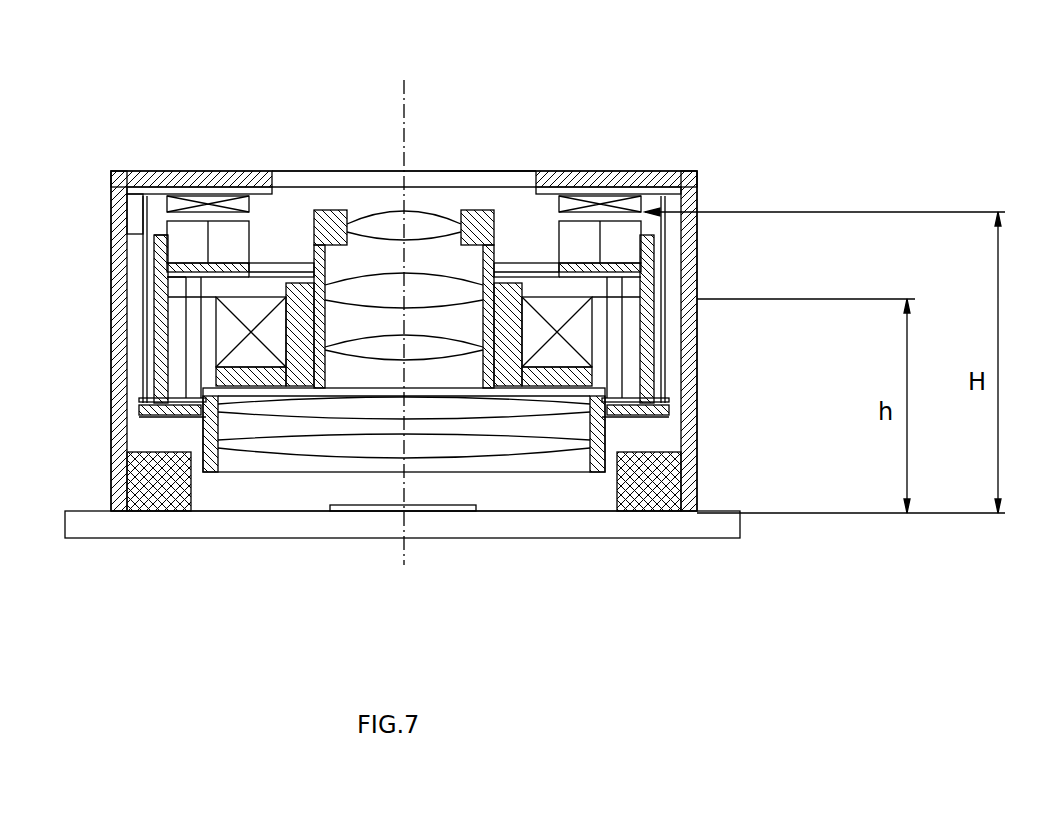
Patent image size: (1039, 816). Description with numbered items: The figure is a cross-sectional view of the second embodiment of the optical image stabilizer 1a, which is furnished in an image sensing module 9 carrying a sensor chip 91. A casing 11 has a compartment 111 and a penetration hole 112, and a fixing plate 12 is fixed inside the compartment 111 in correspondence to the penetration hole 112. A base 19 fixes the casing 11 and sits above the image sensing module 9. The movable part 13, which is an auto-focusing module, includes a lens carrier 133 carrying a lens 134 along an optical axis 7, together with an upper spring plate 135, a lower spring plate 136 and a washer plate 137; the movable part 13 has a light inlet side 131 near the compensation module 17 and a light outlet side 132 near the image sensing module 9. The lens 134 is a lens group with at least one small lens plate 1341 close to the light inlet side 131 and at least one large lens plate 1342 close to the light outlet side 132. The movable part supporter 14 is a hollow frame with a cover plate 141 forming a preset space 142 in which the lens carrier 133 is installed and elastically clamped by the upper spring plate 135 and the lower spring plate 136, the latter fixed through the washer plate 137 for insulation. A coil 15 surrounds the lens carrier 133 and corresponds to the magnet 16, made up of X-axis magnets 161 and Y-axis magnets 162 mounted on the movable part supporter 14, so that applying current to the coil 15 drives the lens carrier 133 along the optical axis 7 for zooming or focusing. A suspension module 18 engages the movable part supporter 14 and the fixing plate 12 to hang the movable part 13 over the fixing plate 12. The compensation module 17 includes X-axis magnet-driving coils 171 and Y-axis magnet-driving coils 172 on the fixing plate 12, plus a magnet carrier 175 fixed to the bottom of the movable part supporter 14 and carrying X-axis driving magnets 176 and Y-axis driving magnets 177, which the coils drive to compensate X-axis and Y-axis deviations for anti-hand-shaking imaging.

The optical image stabilizer 1a is at (758, 108).
The optical axis 7 is at (400, 97).
The image sensing module 9 is at (505, 538).
The sensor chip 91 is at (435, 512).
The casing 11 is at (632, 173).
The compartment 111 is at (477, 202).
The penetration hole 112 is at (450, 180).
The fixing plate 12 is at (697, 187).
The movable part 13 is at (428, 190).
The light inlet side 131 is at (390, 208).
The light outlet side 132 is at (557, 472).
The lens carrier 133 is at (697, 398).
The lens 134 is at (697, 462).
The small lens plate 1341 is at (367, 220).
The large lens plate 1342 is at (330, 462).
The upper spring plate 135 is at (153, 253).
The lower spring plate 136 is at (147, 410).
The washer plate 137 is at (170, 403).
The movable part supporter 14 is at (697, 372).
The cover plate 141 is at (697, 428).
The preset space 142 is at (216, 307).
The coil 15 is at (197, 333).
The magnet 16 is at (697, 260).
The X-axis magnet 161 is at (697, 353).
The Y-axis magnet 162 is at (187, 288).
The compensation module 17 is at (697, 207).
The X-axis magnet-driving coil 171 is at (697, 198).
The Y-axis magnet-driving coil 172 is at (123, 200).
The magnet carrier 175 is at (160, 253).
The X-axis driving magnet 176 is at (697, 230).
The Y-axis driving magnet 177 is at (187, 240).
The suspension module 18 is at (140, 348).
The base 19 is at (697, 490).